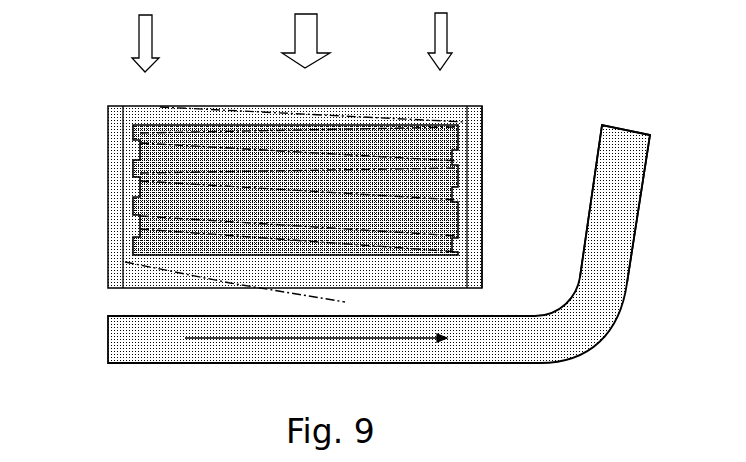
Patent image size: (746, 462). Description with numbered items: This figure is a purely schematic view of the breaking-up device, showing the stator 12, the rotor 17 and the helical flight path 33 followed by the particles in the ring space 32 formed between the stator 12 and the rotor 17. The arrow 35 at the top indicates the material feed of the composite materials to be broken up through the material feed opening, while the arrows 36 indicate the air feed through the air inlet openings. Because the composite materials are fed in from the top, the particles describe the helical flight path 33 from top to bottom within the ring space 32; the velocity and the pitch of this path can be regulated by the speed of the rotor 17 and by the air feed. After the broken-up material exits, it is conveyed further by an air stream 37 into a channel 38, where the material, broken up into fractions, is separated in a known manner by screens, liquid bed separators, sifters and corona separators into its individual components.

The stator 12 is at (480, 207).
The rotor 17 is at (160, 200).
The ring space 32 is at (128, 152).
The flight path 33 is at (377, 117).
The arrow 35 is at (314, 38).
The arrows 36 is at (150, 40).
The air stream 37 is at (282, 338).
The channel 38 is at (605, 238).